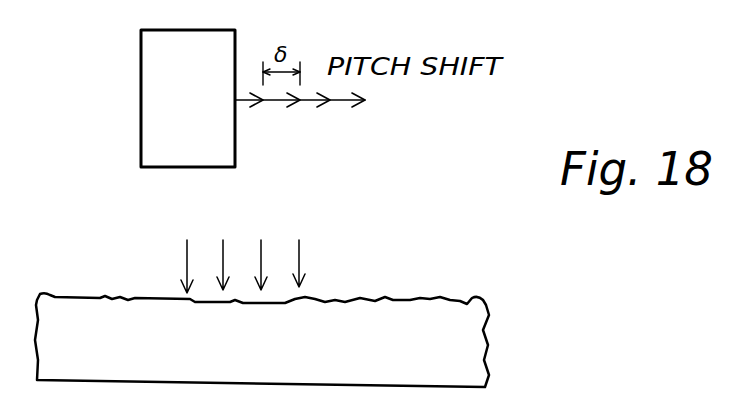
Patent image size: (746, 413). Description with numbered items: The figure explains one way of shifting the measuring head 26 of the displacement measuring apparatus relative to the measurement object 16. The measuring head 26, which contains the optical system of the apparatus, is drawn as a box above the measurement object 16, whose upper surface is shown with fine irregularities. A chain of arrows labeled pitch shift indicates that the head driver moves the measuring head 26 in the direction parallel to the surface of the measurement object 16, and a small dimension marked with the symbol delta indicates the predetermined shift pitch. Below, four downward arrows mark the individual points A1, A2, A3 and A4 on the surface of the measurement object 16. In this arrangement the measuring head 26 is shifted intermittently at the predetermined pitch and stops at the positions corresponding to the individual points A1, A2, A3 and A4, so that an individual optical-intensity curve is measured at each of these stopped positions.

The measuring head 26 is at (153, 60).
The measurement object 16 is at (406, 300).
The point A1 is at (178, 253).
The point A2 is at (222, 251).
The point A3 is at (265, 251).
The point A4 is at (304, 250).